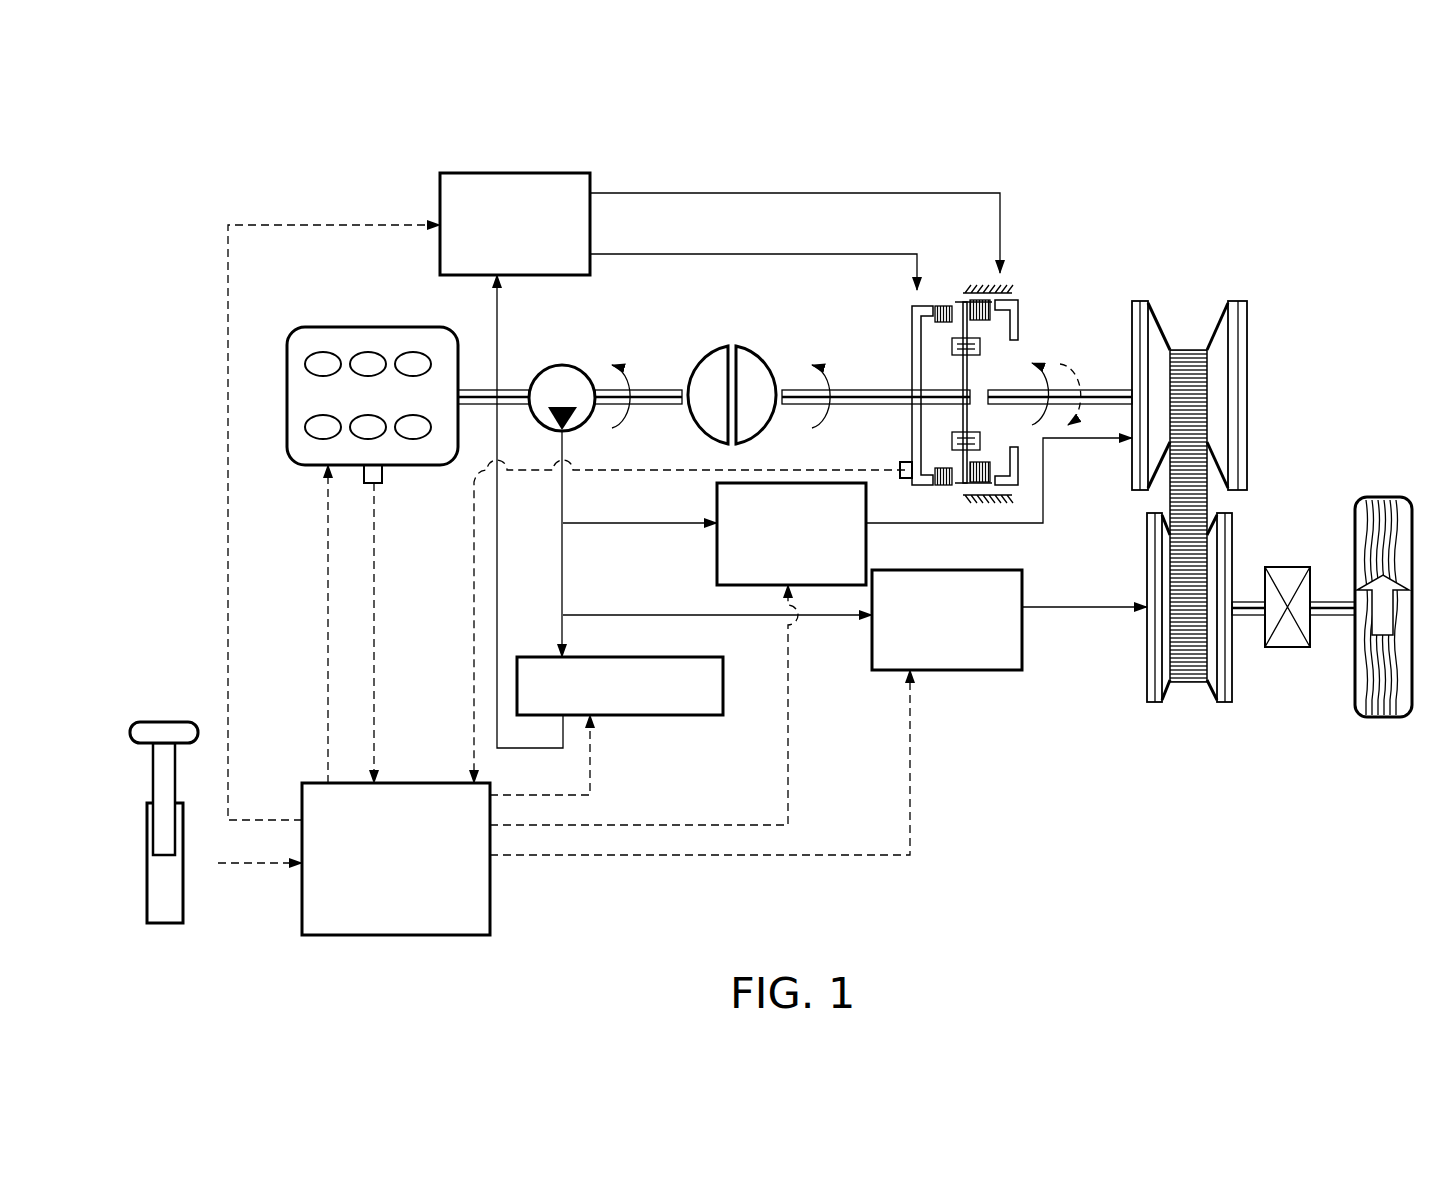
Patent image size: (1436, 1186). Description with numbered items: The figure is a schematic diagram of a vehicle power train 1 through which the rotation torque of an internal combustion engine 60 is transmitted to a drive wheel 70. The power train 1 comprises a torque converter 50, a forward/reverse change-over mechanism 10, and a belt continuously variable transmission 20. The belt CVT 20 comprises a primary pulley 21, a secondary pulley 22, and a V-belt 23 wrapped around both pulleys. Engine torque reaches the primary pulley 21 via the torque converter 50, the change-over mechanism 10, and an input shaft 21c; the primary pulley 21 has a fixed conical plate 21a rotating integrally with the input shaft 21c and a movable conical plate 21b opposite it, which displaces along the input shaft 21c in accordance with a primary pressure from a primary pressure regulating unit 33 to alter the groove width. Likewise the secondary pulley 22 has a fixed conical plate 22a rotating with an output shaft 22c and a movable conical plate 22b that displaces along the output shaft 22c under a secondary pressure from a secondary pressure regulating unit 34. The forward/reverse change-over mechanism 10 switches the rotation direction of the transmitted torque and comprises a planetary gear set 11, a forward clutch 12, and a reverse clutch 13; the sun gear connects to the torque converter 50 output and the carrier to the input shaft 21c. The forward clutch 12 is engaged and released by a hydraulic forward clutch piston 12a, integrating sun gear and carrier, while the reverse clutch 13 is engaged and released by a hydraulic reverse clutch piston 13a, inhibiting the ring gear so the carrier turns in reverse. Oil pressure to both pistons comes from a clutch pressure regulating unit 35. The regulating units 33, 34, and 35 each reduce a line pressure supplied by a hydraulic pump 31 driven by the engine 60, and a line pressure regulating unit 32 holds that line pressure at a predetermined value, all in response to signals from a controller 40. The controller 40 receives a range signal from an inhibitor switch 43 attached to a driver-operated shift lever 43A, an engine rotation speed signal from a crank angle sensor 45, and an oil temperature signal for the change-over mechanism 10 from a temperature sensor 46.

The power train 1 is at (1225, 218).
The forward/reverse change-over mechanism 10 is at (973, 363).
The planetary gear set 11 is at (963, 319).
The forward clutch 12 is at (936, 302).
The forward clutch piston 12a is at (912, 310).
The reverse clutch 13 is at (985, 326).
The reverse clutch piston 13a is at (1018, 305).
The belt continuously variable transmission 20 is at (1189, 471).
The primary pulley 21 is at (1219, 367).
The fixed conical plate 21a is at (1236, 300).
The movable conical plate 21b is at (1141, 300).
The input shaft 21c is at (1108, 385).
The secondary pulley 22 is at (1156, 639).
The fixed conical plate 22a is at (1221, 704).
The movable conical plate 22b is at (1151, 704).
The output shaft 22c is at (1254, 618).
The V-belt 23 is at (1200, 492).
The hydraulic pump 31 is at (554, 368).
The line pressure regulating unit 32 is at (666, 715).
The primary pressure regulating unit 33 is at (717, 503).
The secondary pressure regulating unit 34 is at (943, 670).
The clutch pressure regulating unit 35 is at (439, 202).
The controller 40 is at (308, 783).
The inhibitor switch 43 is at (229, 835).
The shift lever 43A is at (170, 723).
The crank angle sensor 45 is at (384, 476).
The temperature sensor 46 is at (900, 464).
The torque converter 50 is at (743, 344).
The internal combustion engine 60 is at (327, 327).
The drive wheel 70 is at (1394, 496).